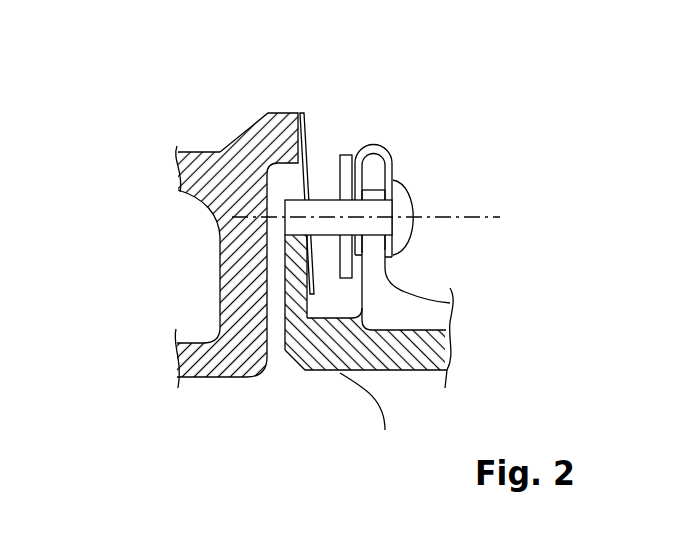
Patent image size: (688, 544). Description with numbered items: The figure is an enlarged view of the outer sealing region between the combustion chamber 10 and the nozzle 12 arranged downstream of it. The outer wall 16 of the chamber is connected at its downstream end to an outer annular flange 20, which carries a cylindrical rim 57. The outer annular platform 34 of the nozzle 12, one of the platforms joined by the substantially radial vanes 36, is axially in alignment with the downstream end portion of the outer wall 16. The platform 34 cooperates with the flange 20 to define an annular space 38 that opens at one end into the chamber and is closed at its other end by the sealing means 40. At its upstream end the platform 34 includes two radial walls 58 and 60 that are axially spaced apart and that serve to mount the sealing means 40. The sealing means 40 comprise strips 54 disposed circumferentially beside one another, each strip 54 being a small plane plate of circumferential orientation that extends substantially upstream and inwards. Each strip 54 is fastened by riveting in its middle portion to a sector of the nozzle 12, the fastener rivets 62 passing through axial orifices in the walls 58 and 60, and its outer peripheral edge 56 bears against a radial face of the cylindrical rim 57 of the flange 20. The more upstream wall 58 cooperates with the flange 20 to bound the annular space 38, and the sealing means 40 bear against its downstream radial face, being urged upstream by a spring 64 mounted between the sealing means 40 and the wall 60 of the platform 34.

The combustion chamber 10 is at (150, 330).
The nozzle 12 is at (491, 202).
The outer wall 16 is at (213, 365).
The outer annular flange 20 is at (203, 162).
The outer annular platform 34 is at (340, 372).
The radial vanes 36 is at (393, 407).
The annular space 38 is at (272, 288).
The sealing means 40 is at (310, 139).
The strip 54 is at (316, 199).
The outer peripheral edge 56 is at (300, 113).
The cylindrical rim 57 is at (270, 132).
The radial wall 58 is at (283, 352).
The radial wall 60 is at (400, 288).
The fastener rivets 62 is at (401, 193).
The spring 64 is at (353, 155).